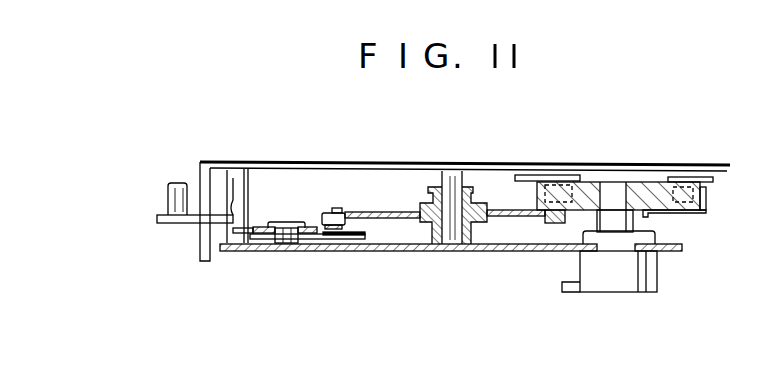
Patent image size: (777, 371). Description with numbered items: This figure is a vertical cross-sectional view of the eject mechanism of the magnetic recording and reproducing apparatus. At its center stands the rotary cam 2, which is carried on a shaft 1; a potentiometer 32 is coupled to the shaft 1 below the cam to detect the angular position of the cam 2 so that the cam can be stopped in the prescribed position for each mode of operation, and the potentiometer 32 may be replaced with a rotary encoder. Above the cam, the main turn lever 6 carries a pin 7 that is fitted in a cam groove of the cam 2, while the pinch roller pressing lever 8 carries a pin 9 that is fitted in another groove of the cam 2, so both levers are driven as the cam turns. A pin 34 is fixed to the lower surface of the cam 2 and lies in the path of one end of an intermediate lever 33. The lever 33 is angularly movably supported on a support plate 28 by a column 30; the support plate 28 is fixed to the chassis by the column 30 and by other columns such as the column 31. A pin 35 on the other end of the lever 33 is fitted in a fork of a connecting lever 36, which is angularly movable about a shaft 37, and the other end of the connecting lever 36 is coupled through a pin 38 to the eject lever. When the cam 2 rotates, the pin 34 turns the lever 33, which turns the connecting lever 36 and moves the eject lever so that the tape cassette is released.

The shaft 1 is at (612, 198).
The rotary cam 2 is at (707, 210).
The main turn lever 6 is at (528, 180).
The pin 7 is at (543, 192).
The pinch roller pressing lever 8 is at (715, 185).
The pin 9 is at (695, 198).
The support plate 28 is at (665, 252).
The column 30 is at (443, 238).
The column 31 is at (230, 247).
The potentiometer 32 is at (636, 283).
The intermediate lever 33 is at (502, 217).
The pin 34 is at (550, 223).
The pin 35 is at (333, 237).
The connecting lever 36 is at (355, 237).
The shaft 37 is at (285, 238).
The pin 38 is at (172, 200).